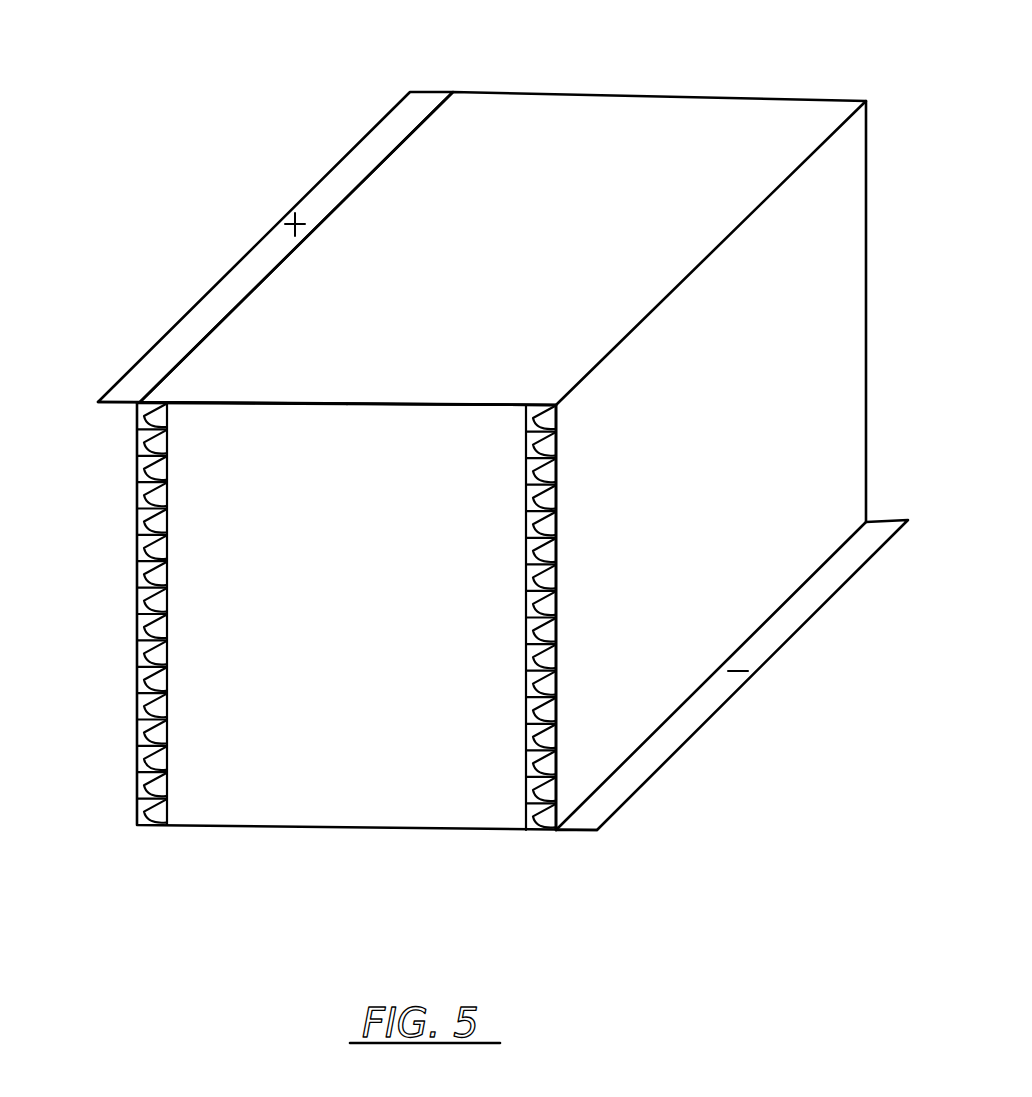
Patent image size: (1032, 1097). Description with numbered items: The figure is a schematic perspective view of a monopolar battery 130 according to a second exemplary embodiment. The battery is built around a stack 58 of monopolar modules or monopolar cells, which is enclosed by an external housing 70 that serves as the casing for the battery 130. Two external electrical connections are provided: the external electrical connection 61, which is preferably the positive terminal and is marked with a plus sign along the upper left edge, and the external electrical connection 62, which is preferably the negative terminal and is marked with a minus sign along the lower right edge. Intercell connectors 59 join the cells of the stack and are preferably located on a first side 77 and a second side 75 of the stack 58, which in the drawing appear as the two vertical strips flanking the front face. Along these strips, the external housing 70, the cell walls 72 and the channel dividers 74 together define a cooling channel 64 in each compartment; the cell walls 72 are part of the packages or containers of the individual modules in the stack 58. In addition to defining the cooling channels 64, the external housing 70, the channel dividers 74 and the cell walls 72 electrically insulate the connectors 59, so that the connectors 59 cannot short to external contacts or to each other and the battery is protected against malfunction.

The monopolar battery 130 is at (292, 46).
The external housing 70 is at (633, 120).
The external electrical connection 61 is at (350, 167).
The external electrical connection 62 is at (708, 721).
The stack 58 is at (313, 795).
The intercell connectors 59 is at (142, 468).
The cooling channel 64 is at (148, 423).
The channel dividers 74 is at (142, 643).
The cell walls 72 is at (167, 498).
The second side 75 is at (200, 580).
The first side 77 is at (488, 587).